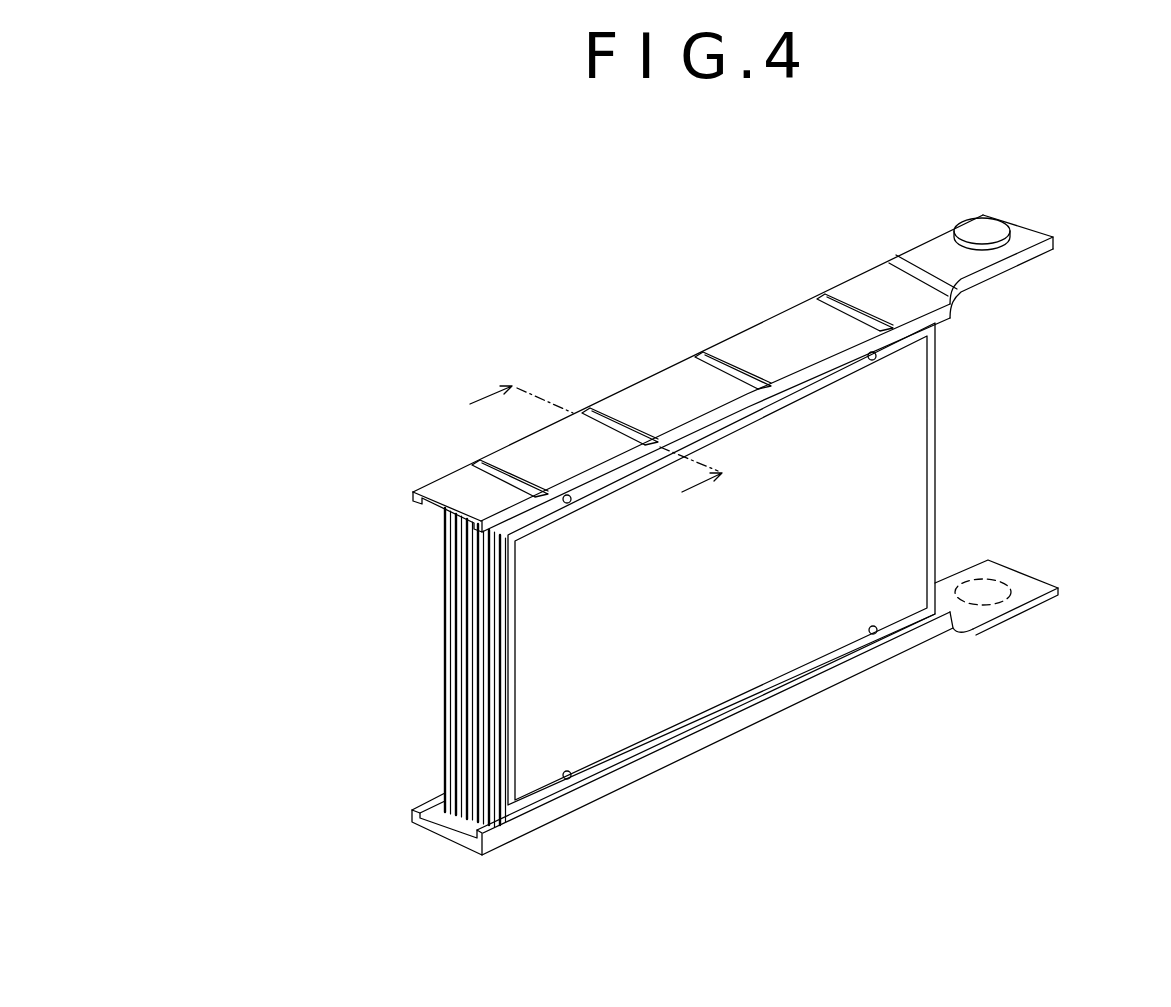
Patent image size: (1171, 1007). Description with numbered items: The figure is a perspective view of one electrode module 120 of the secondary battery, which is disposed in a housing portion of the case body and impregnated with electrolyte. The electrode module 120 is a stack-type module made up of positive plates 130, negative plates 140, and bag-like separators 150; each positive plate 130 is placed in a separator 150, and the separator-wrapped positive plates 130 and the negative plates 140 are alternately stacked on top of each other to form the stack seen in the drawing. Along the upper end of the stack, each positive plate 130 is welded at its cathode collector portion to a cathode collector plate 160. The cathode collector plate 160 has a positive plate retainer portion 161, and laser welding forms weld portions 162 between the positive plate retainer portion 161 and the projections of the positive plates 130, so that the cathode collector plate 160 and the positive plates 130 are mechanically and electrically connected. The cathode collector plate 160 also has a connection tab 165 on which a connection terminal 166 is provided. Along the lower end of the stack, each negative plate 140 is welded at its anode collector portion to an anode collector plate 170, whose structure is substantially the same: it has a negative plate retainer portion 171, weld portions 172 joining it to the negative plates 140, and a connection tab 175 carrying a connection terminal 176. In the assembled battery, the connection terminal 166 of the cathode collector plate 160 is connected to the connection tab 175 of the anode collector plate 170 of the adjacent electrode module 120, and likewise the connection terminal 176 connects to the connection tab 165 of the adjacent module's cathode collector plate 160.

The electrode module 120 is at (1000, 410).
The positive plate 130 is at (440, 662).
The negative plate 140 is at (370, 671).
The bag-like separator 150 is at (411, 678).
The cathode collector plate 160 is at (882, 175).
The positive plate retainer portion 161 is at (863, 290).
The weld portion 162 is at (814, 303).
The connection tab 165 is at (927, 250).
The connection terminal 166 is at (982, 232).
The anode collector plate 170 is at (1015, 692).
The negative plate retainer portion 171 is at (850, 678).
The weld portion 172 is at (758, 728).
The connection tab 175 is at (963, 618).
The connection terminal 176 is at (995, 577).